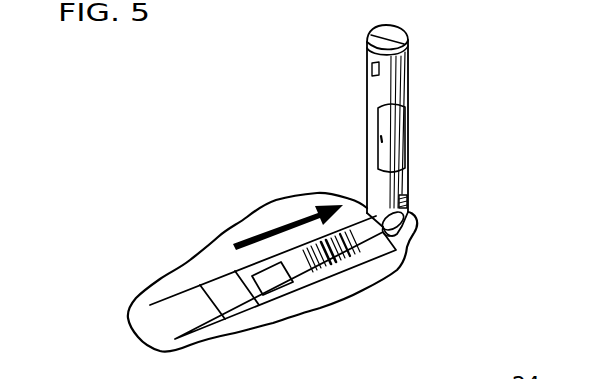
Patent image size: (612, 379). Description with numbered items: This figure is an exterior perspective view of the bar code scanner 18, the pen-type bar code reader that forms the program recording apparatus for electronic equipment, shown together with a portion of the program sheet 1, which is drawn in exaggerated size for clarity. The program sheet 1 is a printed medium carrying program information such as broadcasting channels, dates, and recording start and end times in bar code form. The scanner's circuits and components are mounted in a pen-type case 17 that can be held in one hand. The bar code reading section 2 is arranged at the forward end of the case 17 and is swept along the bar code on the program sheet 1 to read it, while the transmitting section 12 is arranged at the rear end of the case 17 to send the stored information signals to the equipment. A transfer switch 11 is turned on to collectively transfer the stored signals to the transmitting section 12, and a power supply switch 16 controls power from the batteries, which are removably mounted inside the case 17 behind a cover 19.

The program medium 1 is at (191, 268).
The bar code reading section 2 is at (397, 231).
The transfer switch 11 is at (372, 70).
The transmitting section 12 is at (394, 33).
The power supply switch 16 is at (408, 196).
The pen-type case 17 is at (373, 178).
The bar code scanner 18 is at (377, 135).
The cover 19 is at (404, 141).